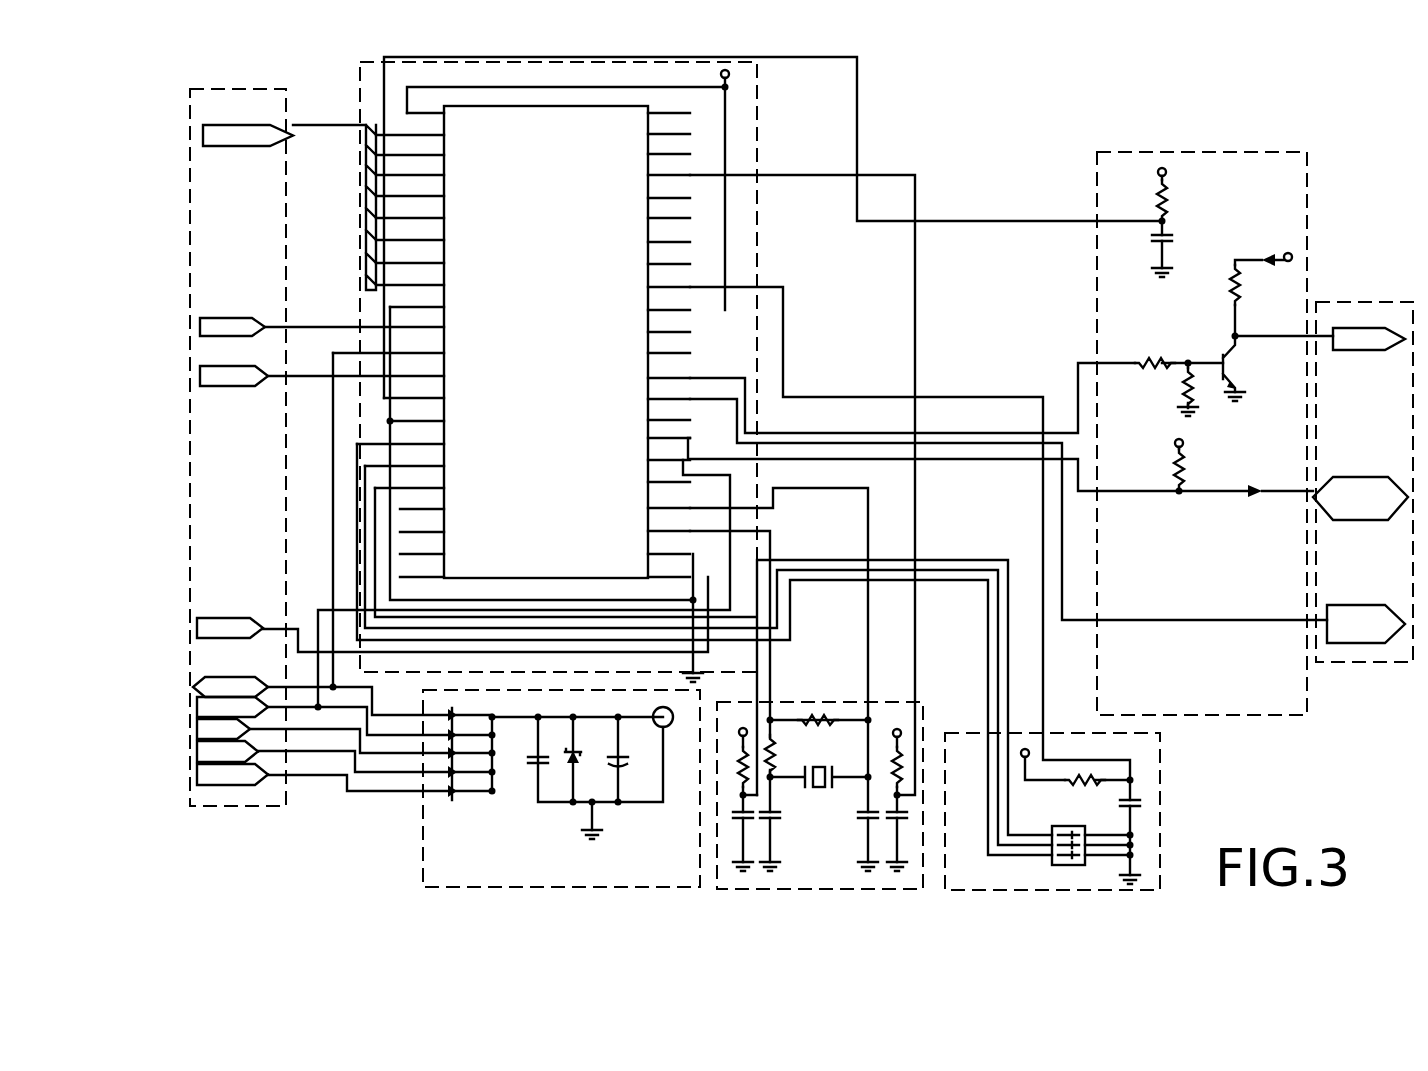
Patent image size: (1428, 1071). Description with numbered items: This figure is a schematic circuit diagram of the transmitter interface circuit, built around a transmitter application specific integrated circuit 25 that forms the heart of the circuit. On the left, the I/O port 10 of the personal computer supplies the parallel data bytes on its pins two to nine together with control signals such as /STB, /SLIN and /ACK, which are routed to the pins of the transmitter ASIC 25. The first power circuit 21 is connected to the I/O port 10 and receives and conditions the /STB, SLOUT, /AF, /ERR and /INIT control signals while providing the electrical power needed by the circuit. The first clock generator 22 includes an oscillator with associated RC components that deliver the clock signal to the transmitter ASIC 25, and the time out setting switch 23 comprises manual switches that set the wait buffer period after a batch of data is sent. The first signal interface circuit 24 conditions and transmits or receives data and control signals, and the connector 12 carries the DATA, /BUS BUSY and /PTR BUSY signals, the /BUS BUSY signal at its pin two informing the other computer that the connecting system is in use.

The I/O port 10 is at (243, 108).
The connector 12 is at (1347, 312).
The first power circuit 21 is at (427, 830).
The first clock generator 22 is at (838, 702).
The time out setting switch 23 is at (968, 738).
The first signal interface circuit 24 is at (1098, 188).
The transmitter application specific integrated circuit 25 is at (410, 72).